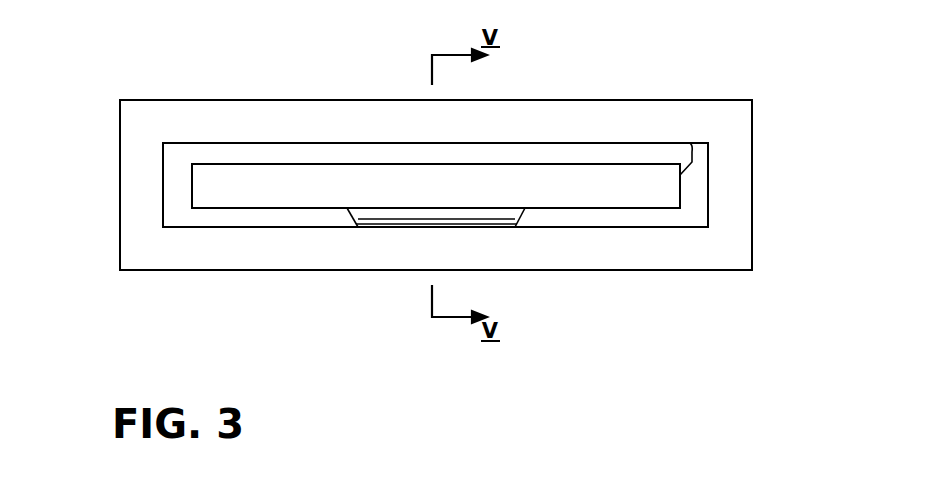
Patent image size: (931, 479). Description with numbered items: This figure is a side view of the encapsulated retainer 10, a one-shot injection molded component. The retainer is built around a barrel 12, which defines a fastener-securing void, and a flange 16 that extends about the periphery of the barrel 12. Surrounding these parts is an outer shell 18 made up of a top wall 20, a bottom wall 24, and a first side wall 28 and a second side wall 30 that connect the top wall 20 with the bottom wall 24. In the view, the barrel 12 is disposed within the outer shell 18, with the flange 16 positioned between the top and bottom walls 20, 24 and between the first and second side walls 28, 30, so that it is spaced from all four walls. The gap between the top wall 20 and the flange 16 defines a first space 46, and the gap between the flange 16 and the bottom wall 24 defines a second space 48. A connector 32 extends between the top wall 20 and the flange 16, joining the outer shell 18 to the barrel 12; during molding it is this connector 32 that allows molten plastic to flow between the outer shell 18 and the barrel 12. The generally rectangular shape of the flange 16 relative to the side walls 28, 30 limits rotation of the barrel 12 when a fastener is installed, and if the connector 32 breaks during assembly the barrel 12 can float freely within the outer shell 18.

The encapsulated retainer 10 is at (587, 36).
The barrel 12 is at (534, 217).
The flange 16 is at (215, 183).
The outer shell 18 is at (112, 128).
The top wall 20 is at (202, 100).
The bottom wall 24 is at (230, 271).
The first side wall 28 is at (120, 227).
The second side wall 30 is at (752, 230).
The connector 32 is at (700, 152).
The first space 46 is at (198, 153).
The second space 48 is at (203, 215).